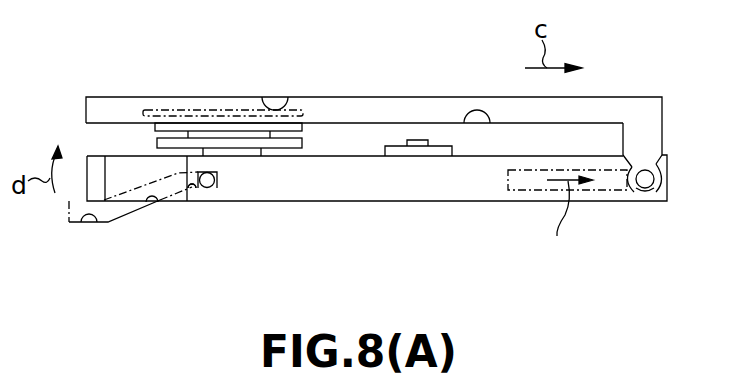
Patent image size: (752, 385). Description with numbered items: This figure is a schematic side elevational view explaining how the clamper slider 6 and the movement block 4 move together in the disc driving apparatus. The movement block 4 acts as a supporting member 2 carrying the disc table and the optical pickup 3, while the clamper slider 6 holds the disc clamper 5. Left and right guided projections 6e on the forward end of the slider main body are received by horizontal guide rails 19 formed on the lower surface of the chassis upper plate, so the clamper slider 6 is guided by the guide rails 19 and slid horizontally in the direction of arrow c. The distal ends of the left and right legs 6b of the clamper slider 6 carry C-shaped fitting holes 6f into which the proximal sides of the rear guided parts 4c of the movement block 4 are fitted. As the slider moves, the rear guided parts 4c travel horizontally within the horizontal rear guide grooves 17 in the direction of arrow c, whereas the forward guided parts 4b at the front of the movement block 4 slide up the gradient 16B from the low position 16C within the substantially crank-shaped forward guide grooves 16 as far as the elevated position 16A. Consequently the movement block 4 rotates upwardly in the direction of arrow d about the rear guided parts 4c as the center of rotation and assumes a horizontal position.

The supporting member 2 is at (302, 143).
The optical pickup 3 is at (407, 150).
The movement block 4 is at (482, 185).
The forward guided part 4b is at (217, 181).
The rear guided part 4c is at (645, 190).
The disc clamper 5 is at (302, 128).
The clamper slider 6 is at (385, 105).
The leg 6b is at (648, 127).
The guided projection 6e is at (275, 99).
The C-shaped fitting hole 6f is at (654, 180).
The forward guide groove 16 is at (117, 225).
The elevated position 16A is at (193, 201).
The gradient 16B is at (153, 203).
The low position 16C is at (83, 227).
The rear guide groove 17 is at (610, 198).
The guide rail 19 is at (203, 113).